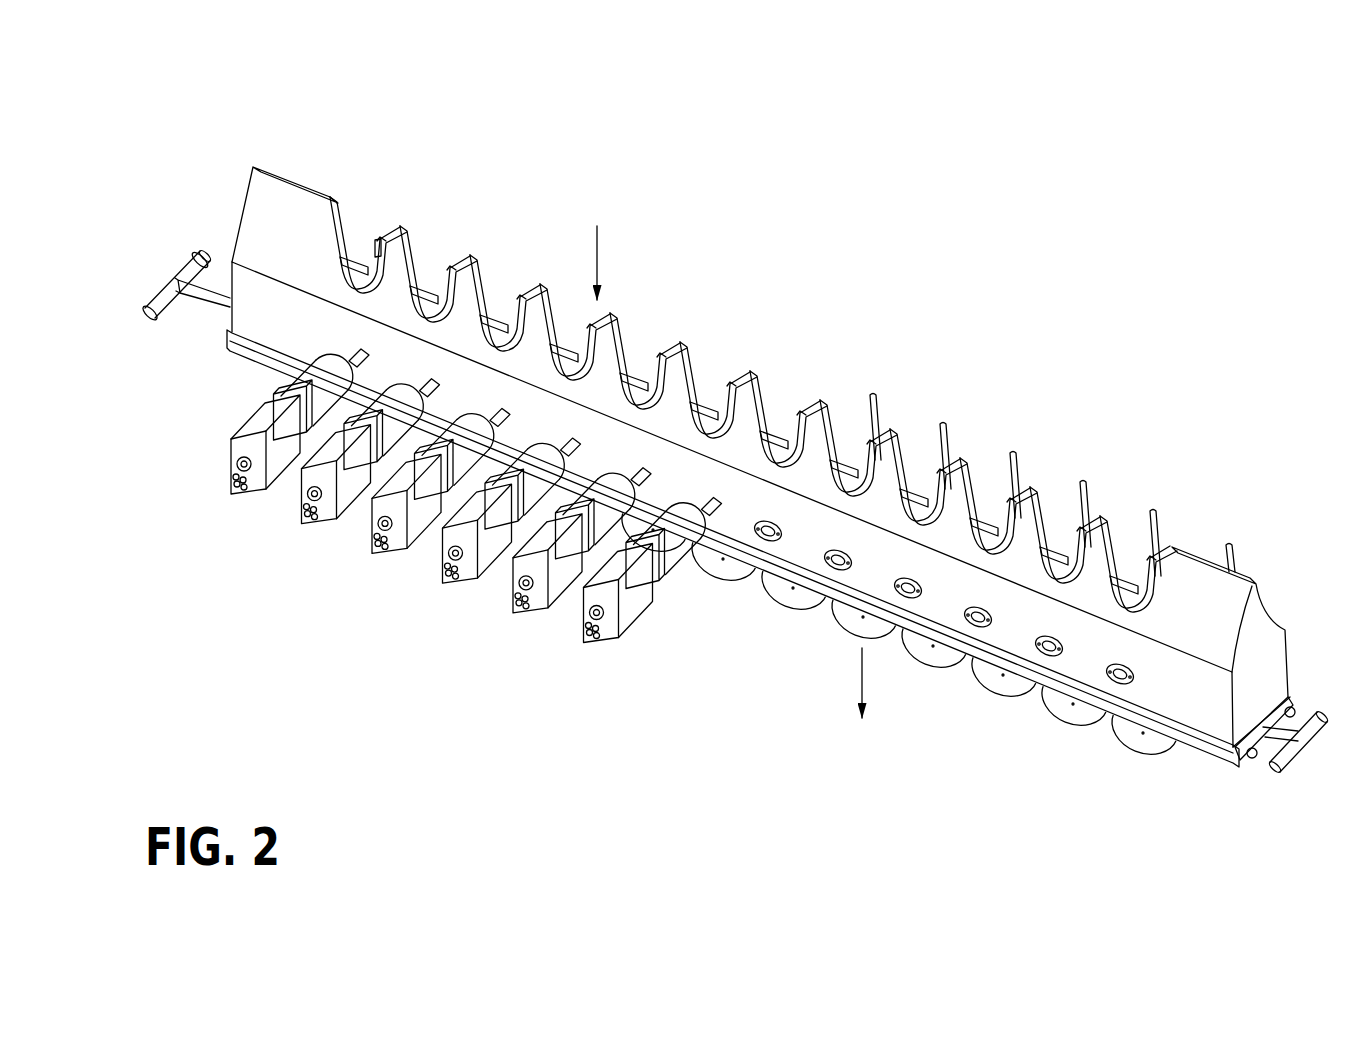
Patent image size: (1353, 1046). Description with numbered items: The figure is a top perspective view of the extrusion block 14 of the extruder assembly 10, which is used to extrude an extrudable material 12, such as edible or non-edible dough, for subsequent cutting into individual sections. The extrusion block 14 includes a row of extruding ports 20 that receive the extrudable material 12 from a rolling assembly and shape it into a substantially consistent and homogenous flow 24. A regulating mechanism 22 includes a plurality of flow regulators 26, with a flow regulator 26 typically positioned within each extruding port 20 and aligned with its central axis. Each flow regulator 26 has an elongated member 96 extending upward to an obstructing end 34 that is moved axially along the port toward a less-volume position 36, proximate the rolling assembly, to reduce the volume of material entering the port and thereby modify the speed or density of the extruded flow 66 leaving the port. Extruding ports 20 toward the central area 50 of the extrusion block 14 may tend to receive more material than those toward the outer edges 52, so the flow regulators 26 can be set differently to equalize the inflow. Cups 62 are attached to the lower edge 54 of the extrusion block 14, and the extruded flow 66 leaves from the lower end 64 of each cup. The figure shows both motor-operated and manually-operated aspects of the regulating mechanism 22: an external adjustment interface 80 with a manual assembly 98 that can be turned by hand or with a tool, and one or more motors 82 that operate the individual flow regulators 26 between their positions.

The extruder assembly 10 is at (292, 121).
The extrudable material 12 is at (619, 283).
The extrusion block 14 is at (1297, 651).
The extruding ports 20 is at (420, 257).
The regulating mechanism 22 is at (718, 366).
The flow 24 is at (598, 251).
The flow regulator 26 is at (788, 403).
The obstructing end 34 is at (444, 256).
The less-volume position 36 is at (918, 430).
The central area 50 is at (744, 597).
The outer edges 52 is at (1192, 527).
The lower edge 54 is at (1200, 757).
The cups 62 is at (1143, 737).
The lower end 64 is at (1053, 723).
The extruded flow 66 is at (866, 675).
The adjustment interface 80 is at (226, 422).
The motors 82 is at (246, 488).
The elongated member 96 is at (351, 238).
The manual assembly 98 is at (1023, 468).